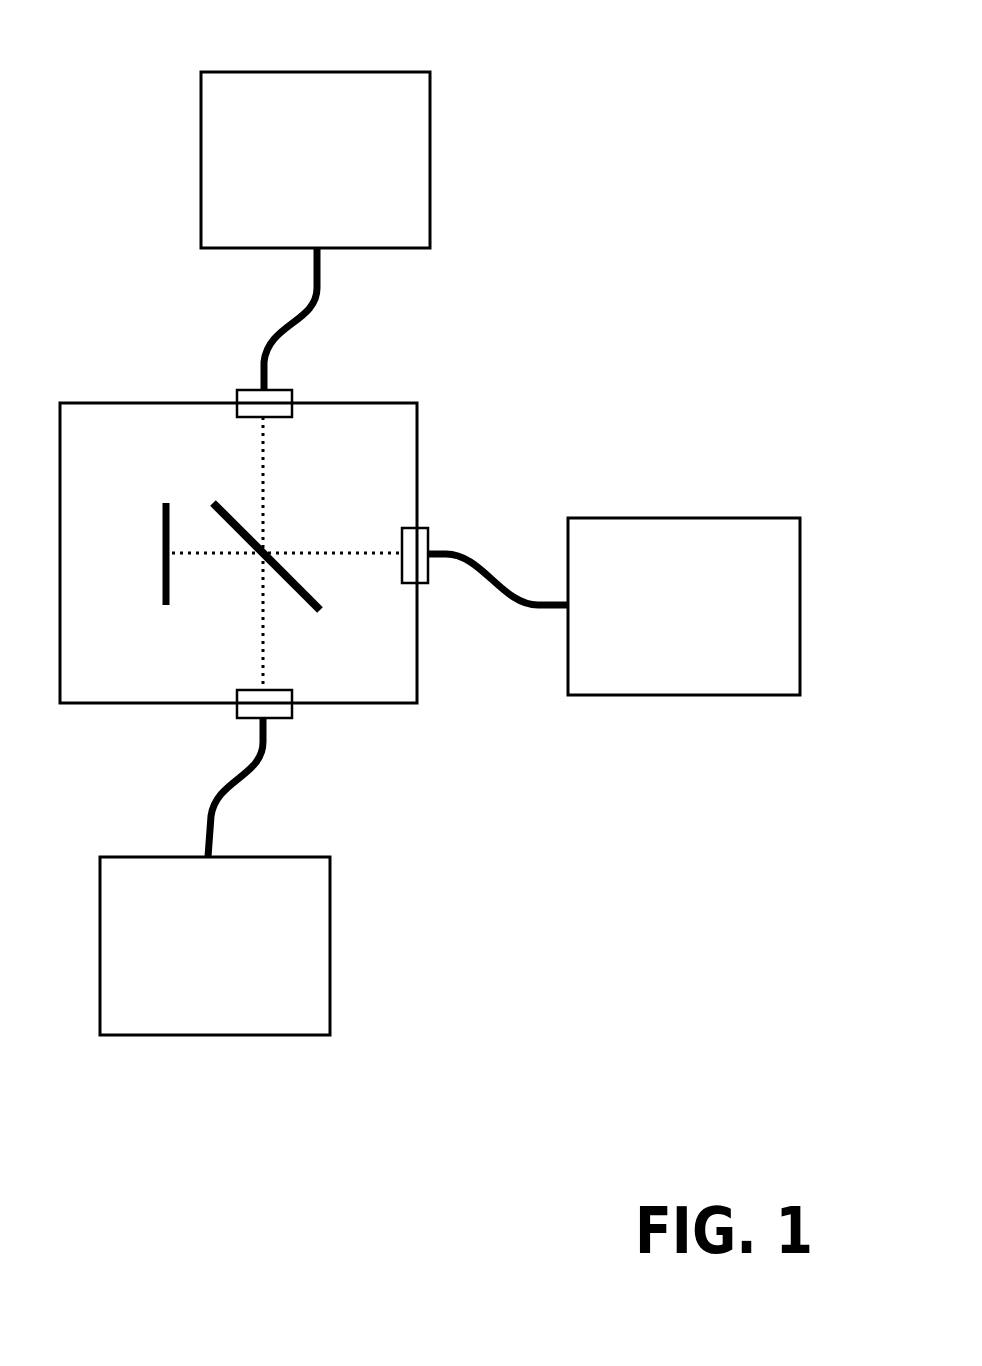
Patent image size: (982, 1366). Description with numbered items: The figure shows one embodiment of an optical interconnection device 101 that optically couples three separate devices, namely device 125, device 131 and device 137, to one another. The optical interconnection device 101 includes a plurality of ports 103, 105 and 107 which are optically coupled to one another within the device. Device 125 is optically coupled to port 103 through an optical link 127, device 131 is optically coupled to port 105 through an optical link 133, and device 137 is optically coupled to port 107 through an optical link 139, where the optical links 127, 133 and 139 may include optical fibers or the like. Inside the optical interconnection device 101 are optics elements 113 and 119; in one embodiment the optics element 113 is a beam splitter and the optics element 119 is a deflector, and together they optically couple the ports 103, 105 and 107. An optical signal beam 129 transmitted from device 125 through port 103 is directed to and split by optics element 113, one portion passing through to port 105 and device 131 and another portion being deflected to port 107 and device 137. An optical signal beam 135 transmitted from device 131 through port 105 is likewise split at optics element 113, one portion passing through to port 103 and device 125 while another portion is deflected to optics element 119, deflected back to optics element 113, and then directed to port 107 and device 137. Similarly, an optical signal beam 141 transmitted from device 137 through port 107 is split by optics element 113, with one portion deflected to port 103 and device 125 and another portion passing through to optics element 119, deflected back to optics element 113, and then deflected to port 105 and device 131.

The optical interconnection device 101 is at (413, 398).
The port 103 is at (240, 388).
The port 105 is at (240, 720).
The port 107 is at (428, 527).
The optics element 113 is at (320, 610).
The optics element 119 is at (166, 604).
The device 125 is at (417, 70).
The optical link 127 is at (320, 293).
The optical signal beam 129 is at (263, 442).
The device 131 is at (327, 1038).
The optical link 133 is at (233, 803).
The optical signal beam 135 is at (263, 643).
The device 137 is at (787, 518).
The optical link 139 is at (518, 603).
The optical signal beam 141 is at (315, 552).